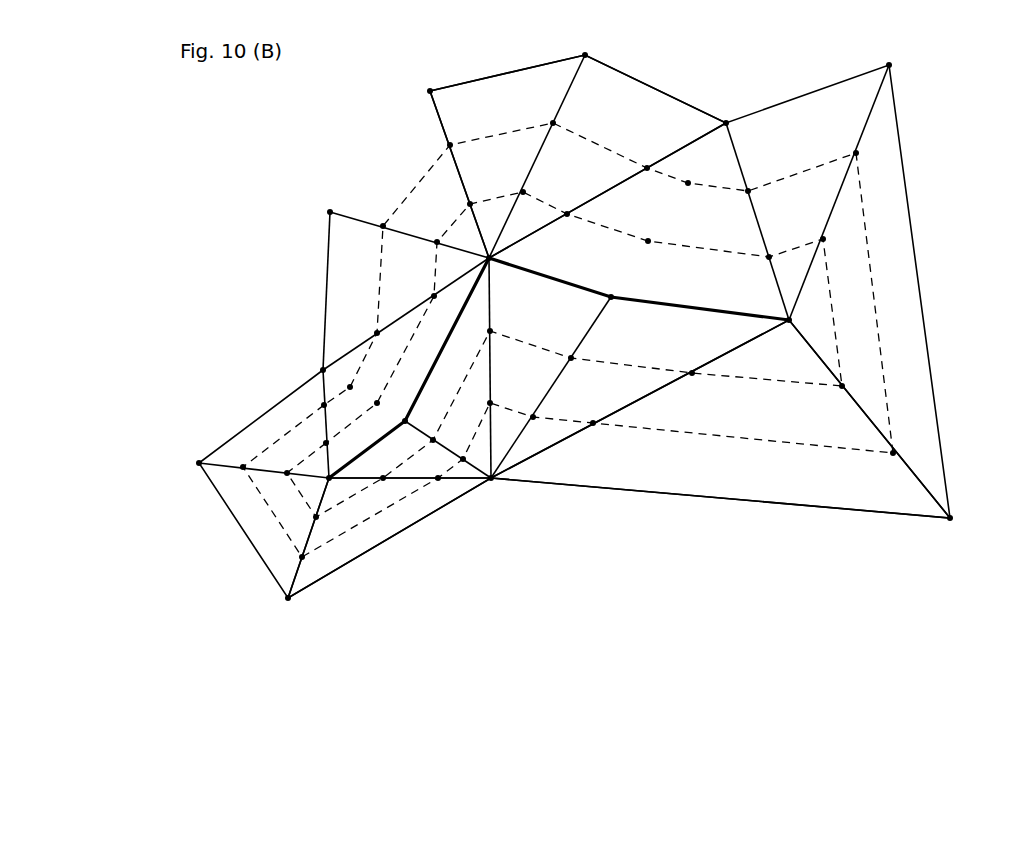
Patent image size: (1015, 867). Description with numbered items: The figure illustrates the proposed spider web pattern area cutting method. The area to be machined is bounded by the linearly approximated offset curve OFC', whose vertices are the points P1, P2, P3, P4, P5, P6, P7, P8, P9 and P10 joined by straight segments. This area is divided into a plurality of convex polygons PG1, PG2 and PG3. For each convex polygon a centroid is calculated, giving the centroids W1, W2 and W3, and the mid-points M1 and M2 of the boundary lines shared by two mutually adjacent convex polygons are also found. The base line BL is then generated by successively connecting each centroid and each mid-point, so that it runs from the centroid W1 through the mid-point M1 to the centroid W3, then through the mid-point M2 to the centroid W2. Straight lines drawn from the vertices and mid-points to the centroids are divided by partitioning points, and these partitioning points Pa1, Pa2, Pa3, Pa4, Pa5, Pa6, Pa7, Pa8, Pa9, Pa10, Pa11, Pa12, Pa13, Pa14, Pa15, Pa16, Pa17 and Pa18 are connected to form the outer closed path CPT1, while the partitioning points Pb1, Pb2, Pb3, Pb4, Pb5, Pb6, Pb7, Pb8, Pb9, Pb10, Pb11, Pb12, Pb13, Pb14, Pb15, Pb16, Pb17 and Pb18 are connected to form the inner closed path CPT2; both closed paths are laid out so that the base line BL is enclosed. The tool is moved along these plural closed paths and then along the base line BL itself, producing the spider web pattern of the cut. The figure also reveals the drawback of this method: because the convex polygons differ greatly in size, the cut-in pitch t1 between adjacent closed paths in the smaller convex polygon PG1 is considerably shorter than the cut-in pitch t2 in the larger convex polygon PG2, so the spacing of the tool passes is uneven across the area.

The boundary point P1 is at (323, 370).
The boundary point P2 is at (199, 463).
The boundary point P3 is at (289, 615).
The boundary point P4 is at (501, 492).
The boundary point P5 is at (966, 527).
The boundary point P6 is at (905, 59).
The boundary point P7 is at (725, 109).
The boundary point P8 is at (586, 45).
The boundary point P9 is at (426, 79).
The boundary point P10 is at (330, 212).
The centroid W1 is at (329, 478).
The centroid W2 is at (809, 322).
The centroid W3 is at (489, 258).
The mid-point M1 is at (405, 421).
The mid-point M2 is at (611, 297).
The base line BL is at (697, 296).
The linearly approximated offset curve OFC' is at (295, 291).
The convex polygon PG1 is at (373, 535).
The convex polygon PG2 is at (623, 475).
The convex polygon PG3 is at (635, 88).
The closed path CPT1 is at (783, 443).
The closed path CPT2 is at (818, 385).
The cut-in pitch t1 is at (304, 499).
The cut-in pitch t2 is at (748, 379).
The partitioning point Pa1 is at (324, 405).
The partitioning point Pa2 is at (243, 467).
The partitioning point Pa3 is at (302, 557).
The partitioning point Pa4 is at (438, 478).
The partitioning point Pa5 is at (463, 459).
The partitioning point Pa6 is at (490, 403).
The partitioning point Pa7 is at (533, 417).
The partitioning point Pa8 is at (593, 423).
The partitioning point Pa9 is at (893, 453).
The partitioning point Pa10 is at (856, 153).
The partitioning point Pa11 is at (748, 191).
The partitioning point Pa12 is at (688, 183).
The partitioning point Pa13 is at (647, 168).
The partitioning point Pa14 is at (553, 123).
The partitioning point Pa15 is at (450, 145).
The partitioning point Pa16 is at (389, 211).
The partitioning point Pa17 is at (377, 333).
The partitioning point Pa18 is at (350, 387).
The partitioning point Pb1 is at (326, 443).
The partitioning point Pb2 is at (287, 473).
The partitioning point Pb3 is at (316, 517).
The partitioning point Pb4 is at (383, 478).
The partitioning point Pb5 is at (433, 440).
The partitioning point Pb6 is at (490, 331).
The partitioning point Pb7 is at (571, 358).
The partitioning point Pb8 is at (692, 373).
The partitioning point Pb9 is at (842, 386).
The partitioning point Pb10 is at (823, 239).
The partitioning point Pb11 is at (769, 257).
The partitioning point Pb12 is at (648, 241).
The partitioning point Pb13 is at (567, 214).
The partitioning point Pb14 is at (523, 192).
The partitioning point Pb15 is at (470, 204).
The partitioning point Pb16 is at (446, 226).
The partitioning point Pb17 is at (434, 296).
The partitioning point Pb18 is at (377, 403).